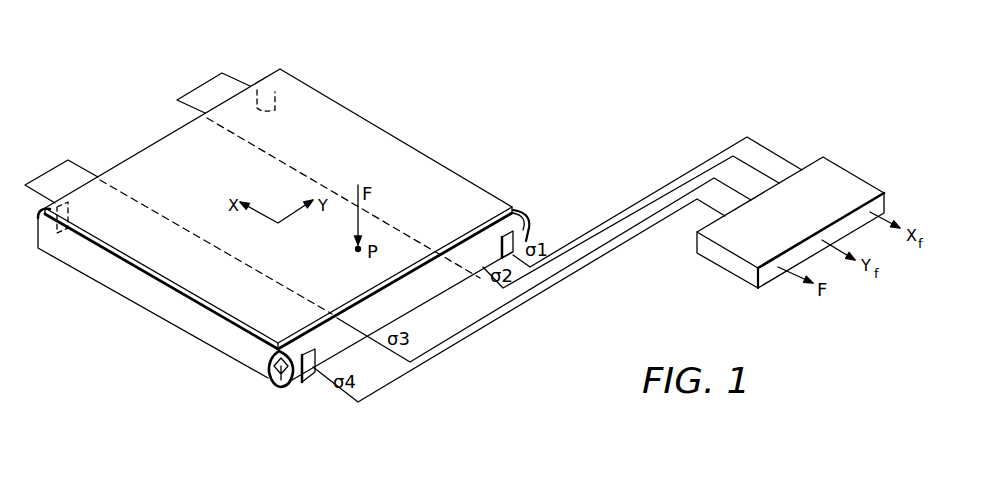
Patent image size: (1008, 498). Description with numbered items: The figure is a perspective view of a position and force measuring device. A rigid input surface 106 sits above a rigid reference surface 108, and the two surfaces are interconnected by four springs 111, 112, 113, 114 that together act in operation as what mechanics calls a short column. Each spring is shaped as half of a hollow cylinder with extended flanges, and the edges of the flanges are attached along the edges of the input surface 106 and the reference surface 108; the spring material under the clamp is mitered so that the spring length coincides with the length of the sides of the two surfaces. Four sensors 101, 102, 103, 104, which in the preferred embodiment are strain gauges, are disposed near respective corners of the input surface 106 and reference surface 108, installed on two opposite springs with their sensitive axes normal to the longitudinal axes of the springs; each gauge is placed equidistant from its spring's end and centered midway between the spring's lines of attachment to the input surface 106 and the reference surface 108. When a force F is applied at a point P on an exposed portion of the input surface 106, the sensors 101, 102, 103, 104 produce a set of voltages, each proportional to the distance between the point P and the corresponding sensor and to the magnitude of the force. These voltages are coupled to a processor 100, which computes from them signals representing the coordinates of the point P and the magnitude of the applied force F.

The processor 100 is at (810, 177).
The sensor 101 is at (510, 247).
The sensor 102 is at (257, 93).
The sensor 103 is at (62, 233).
The sensor 104 is at (310, 375).
The input surface 106 is at (311, 195).
The reference surface 108 is at (277, 387).
The spring 111 is at (422, 295).
The spring 112 is at (513, 208).
The spring 113 is at (142, 158).
The spring 114 is at (173, 315).